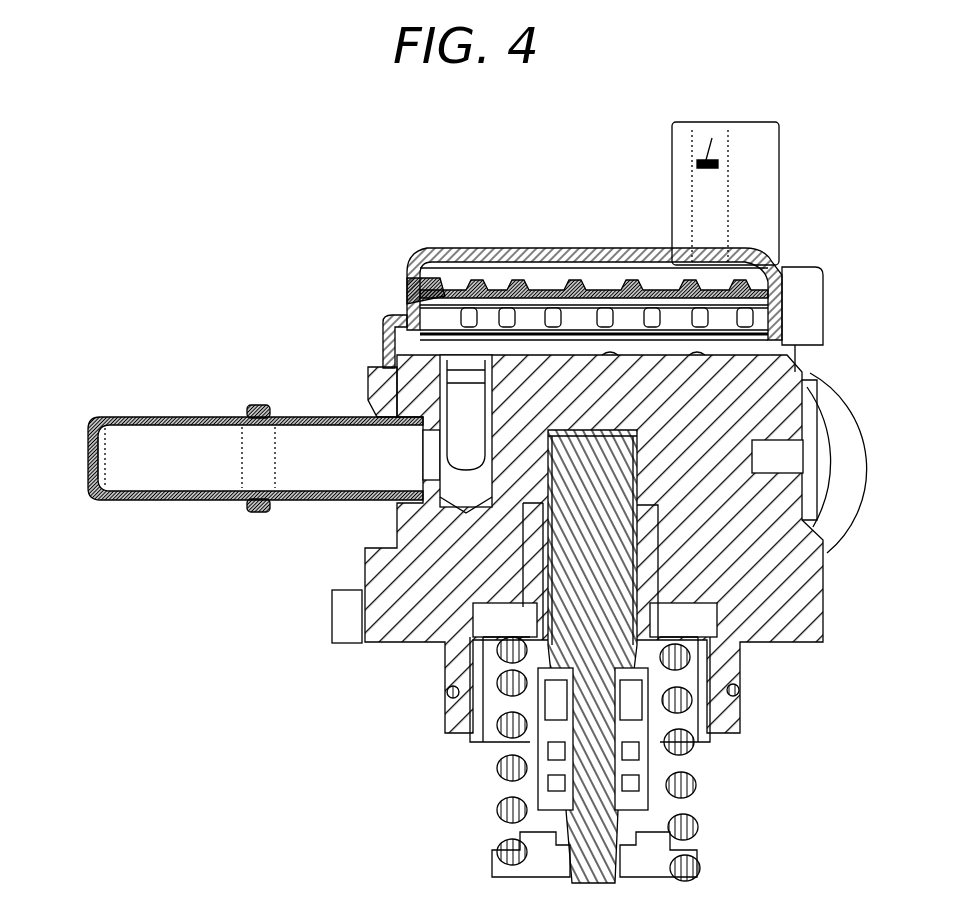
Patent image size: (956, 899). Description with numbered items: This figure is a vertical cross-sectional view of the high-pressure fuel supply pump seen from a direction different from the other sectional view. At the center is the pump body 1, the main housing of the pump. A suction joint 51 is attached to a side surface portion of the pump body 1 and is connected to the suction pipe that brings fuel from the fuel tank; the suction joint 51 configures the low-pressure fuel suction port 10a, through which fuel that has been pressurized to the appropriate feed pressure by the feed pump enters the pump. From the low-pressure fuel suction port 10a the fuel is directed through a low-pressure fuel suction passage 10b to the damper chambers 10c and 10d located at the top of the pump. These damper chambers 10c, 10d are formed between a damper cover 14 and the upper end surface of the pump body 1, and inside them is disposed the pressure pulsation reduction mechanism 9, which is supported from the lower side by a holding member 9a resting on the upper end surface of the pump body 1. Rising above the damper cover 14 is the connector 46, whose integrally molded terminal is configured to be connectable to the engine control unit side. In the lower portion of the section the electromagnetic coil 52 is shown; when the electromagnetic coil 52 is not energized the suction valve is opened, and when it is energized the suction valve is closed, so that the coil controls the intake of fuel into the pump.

The pump body 1 is at (812, 362).
The pressure pulsation reduction mechanism 9 is at (530, 290).
The holding member 9a is at (405, 297).
The low-pressure fuel suction port 10a is at (133, 460).
The low-pressure fuel suction passage 10b is at (385, 350).
The damper chamber 10c is at (600, 285).
The damper chamber 10d is at (625, 322).
The damper cover 14 is at (482, 245).
The connector 46 is at (784, 190).
The suction joint 51 is at (162, 417).
The electromagnetic coil 52 is at (440, 450).